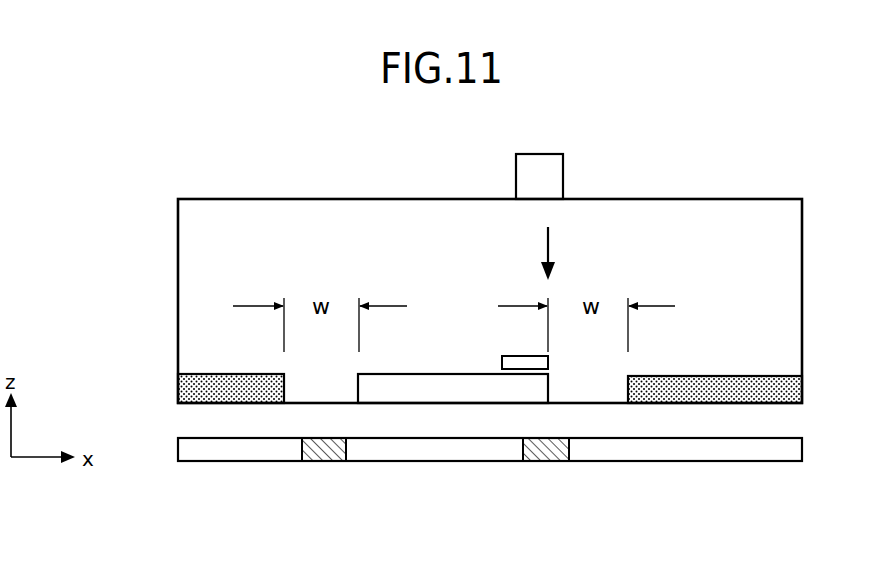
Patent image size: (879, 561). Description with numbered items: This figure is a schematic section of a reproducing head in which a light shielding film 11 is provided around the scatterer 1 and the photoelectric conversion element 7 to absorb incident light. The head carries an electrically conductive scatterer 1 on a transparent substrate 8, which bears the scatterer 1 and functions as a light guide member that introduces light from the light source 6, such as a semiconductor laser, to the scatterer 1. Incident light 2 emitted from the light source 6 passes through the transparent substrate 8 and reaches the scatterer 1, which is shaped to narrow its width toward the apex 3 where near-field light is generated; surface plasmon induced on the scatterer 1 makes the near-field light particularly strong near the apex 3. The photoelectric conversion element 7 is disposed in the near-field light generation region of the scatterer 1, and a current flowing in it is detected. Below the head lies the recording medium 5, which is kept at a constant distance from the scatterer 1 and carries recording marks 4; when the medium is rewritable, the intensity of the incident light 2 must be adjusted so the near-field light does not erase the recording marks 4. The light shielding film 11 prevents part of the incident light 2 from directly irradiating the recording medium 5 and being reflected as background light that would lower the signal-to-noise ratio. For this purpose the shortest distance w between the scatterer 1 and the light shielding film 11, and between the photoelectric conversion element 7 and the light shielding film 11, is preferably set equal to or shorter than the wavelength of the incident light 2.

The scatterer 1 is at (407, 374).
The incident light 2 is at (545, 242).
The apex 3 is at (562, 386).
The recording marks 4 is at (323, 461).
The recording medium 5 is at (178, 450).
The light source 6 is at (533, 154).
The photoelectric conversion element 7 is at (502, 362).
The transparent substrate 8 is at (178, 238).
The light shielding film 11 is at (225, 374).